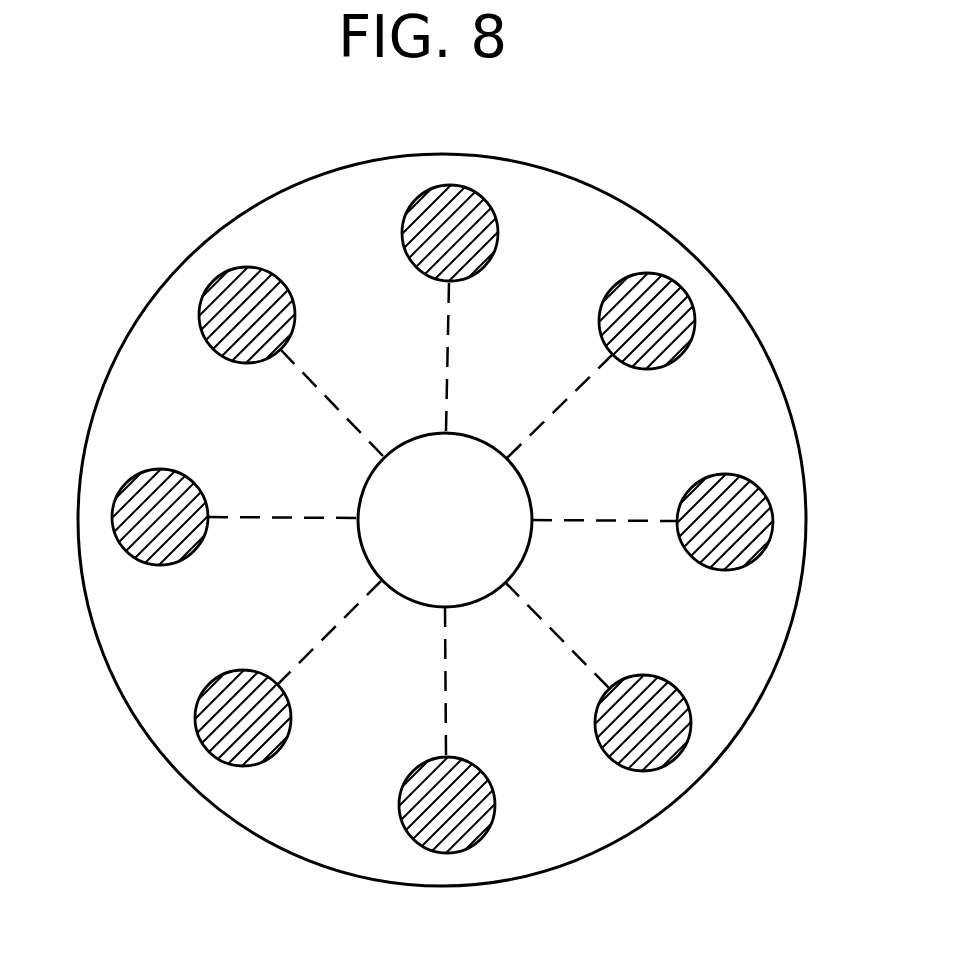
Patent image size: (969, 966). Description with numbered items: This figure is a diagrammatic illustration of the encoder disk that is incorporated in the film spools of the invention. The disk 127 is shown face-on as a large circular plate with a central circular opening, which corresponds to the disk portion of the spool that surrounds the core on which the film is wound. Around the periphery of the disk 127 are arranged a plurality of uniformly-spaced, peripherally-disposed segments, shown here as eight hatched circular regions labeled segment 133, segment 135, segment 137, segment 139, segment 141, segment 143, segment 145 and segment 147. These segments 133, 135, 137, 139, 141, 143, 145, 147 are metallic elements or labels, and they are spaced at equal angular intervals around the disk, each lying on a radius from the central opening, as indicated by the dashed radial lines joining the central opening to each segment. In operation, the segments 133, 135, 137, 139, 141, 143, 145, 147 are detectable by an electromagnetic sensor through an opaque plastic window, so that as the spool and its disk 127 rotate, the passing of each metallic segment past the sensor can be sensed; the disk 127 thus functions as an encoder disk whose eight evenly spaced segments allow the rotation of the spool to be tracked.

The disk portion 127 is at (471, 113).
The segment 133 is at (483, 195).
The segment 135 is at (690, 298).
The segment 137 is at (762, 492).
The segment 139 is at (680, 757).
The segment 141 is at (410, 837).
The segment 143 is at (195, 715).
The segment 145 is at (137, 472).
The segment 147 is at (257, 267).